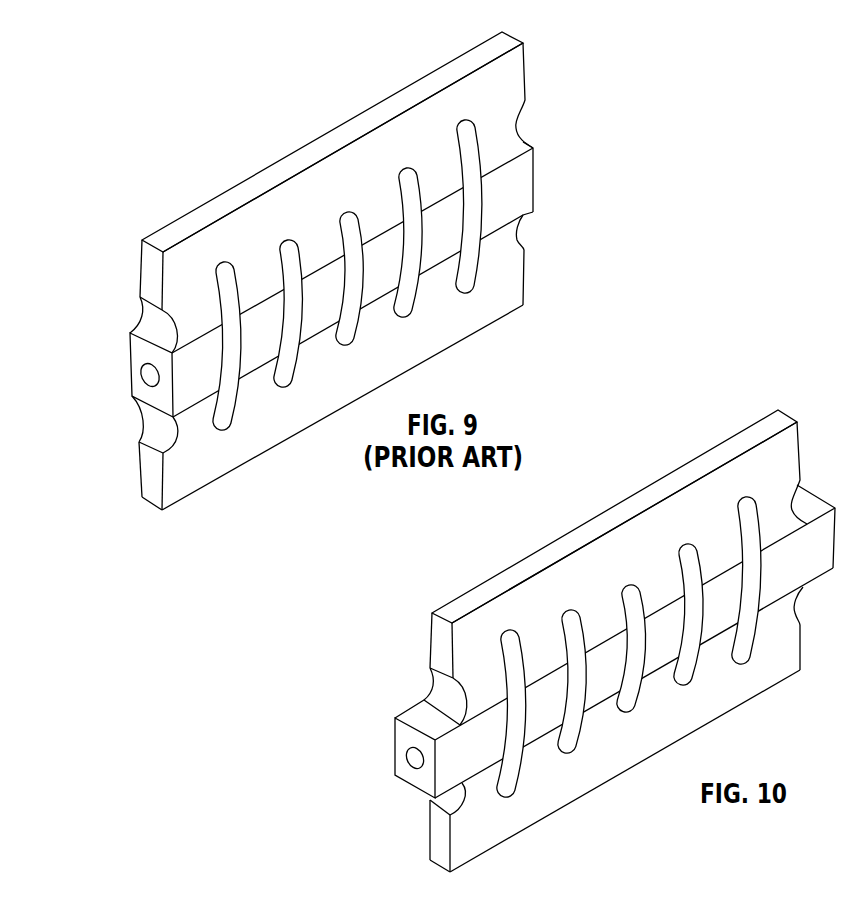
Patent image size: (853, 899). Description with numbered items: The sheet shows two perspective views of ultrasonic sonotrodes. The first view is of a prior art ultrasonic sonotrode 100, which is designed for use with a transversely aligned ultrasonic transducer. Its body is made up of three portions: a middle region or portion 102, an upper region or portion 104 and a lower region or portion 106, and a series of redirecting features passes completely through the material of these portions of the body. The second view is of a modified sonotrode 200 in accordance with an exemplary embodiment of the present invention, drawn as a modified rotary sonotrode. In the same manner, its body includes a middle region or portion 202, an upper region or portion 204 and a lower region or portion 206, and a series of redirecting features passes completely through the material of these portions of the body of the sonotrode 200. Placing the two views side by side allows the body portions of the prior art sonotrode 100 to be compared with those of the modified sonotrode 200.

In FIG. 9, the prior art ultrasonic sonotrode 100 is at (277, 271).
In FIG. 9, the middle region or portion 102 is at (130, 372).
In FIG. 9, the upper region or portion 104 is at (365, 198).
In FIG. 9, the lower region or portion 106 is at (380, 371).
In FIG. 10, the modified sonotrode 200 is at (562, 616).
In FIG. 10, the middle region or portion 202 is at (393, 752).
In FIG. 10, the upper region or portion 204 is at (637, 573).
In FIG. 10, the lower region or portion 206 is at (661, 744).